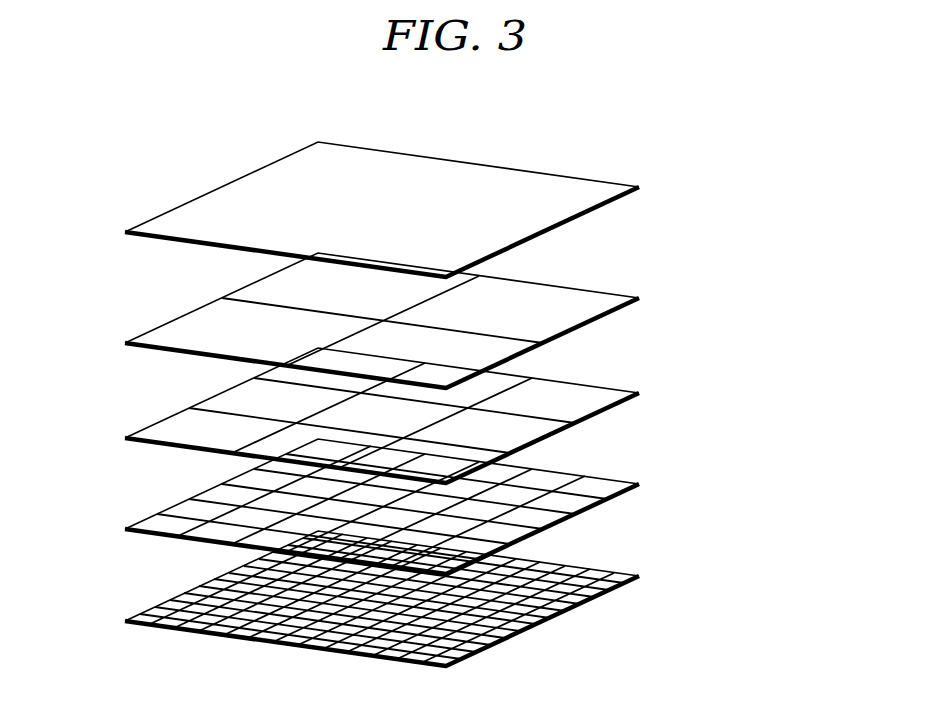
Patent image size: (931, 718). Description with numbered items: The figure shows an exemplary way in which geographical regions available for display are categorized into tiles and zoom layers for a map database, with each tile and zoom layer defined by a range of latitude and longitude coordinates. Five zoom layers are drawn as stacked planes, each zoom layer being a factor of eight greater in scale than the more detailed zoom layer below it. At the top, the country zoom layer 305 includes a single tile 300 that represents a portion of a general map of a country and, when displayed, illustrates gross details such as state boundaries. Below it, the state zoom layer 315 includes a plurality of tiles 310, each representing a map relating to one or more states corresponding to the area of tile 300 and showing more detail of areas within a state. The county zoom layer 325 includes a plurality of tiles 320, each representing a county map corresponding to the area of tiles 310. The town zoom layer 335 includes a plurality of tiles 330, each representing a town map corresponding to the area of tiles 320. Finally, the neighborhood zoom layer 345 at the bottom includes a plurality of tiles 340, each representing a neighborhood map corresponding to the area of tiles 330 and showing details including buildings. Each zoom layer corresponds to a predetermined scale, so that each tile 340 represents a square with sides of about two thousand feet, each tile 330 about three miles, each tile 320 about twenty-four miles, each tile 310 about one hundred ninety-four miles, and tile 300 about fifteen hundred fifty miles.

The tile 300 is at (162, 221).
The zoom layer 305 is at (619, 183).
The tiles 310 is at (175, 338).
The zoom layer 315 is at (618, 298).
The tiles 320 is at (160, 432).
The zoom layer 325 is at (618, 395).
The tiles 330 is at (155, 523).
The zoom layer 335 is at (618, 486).
The tiles 340 is at (143, 620).
The zoom layer 345 is at (618, 578).